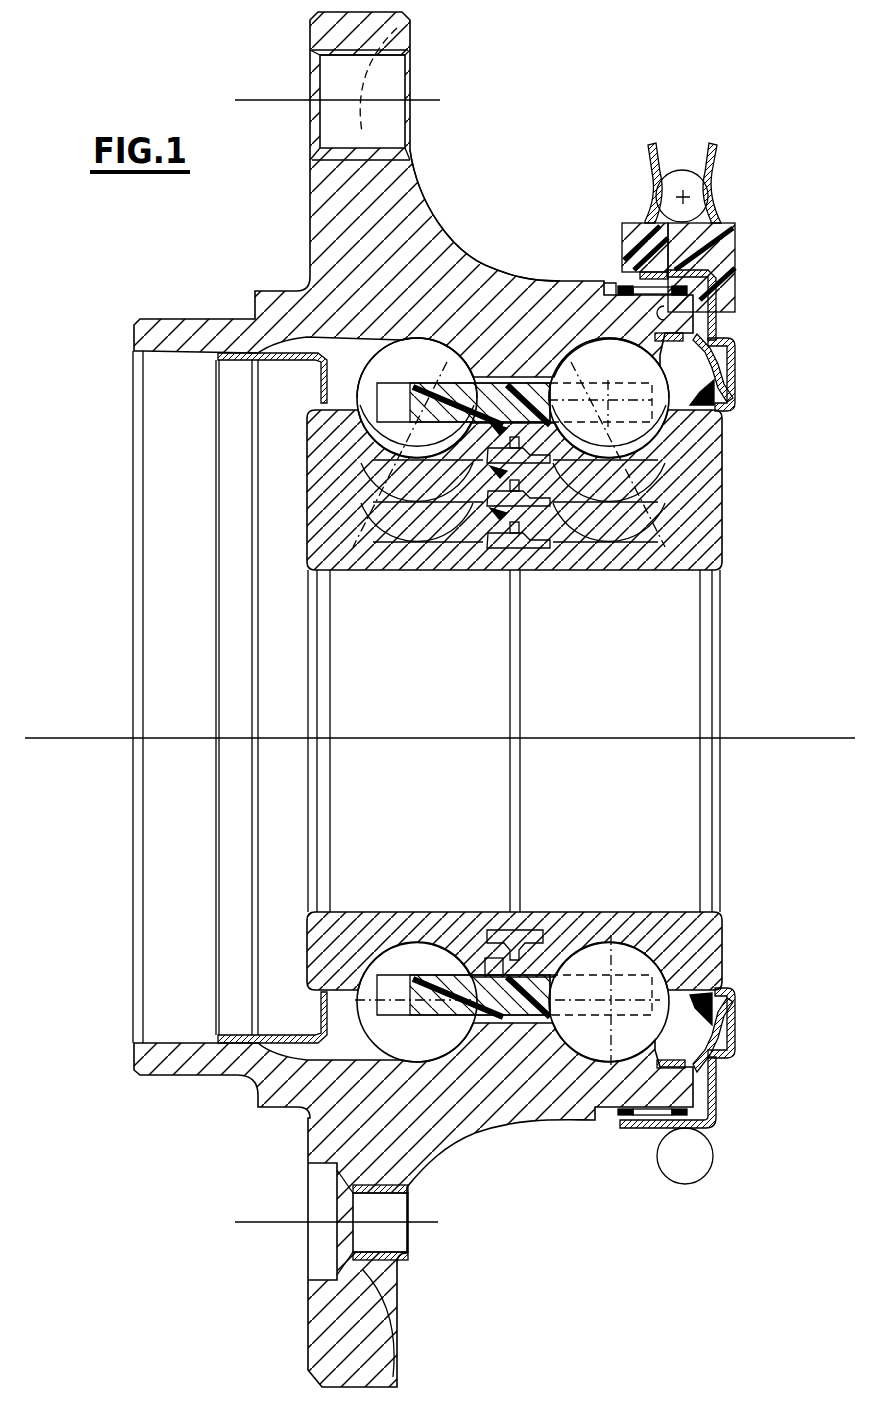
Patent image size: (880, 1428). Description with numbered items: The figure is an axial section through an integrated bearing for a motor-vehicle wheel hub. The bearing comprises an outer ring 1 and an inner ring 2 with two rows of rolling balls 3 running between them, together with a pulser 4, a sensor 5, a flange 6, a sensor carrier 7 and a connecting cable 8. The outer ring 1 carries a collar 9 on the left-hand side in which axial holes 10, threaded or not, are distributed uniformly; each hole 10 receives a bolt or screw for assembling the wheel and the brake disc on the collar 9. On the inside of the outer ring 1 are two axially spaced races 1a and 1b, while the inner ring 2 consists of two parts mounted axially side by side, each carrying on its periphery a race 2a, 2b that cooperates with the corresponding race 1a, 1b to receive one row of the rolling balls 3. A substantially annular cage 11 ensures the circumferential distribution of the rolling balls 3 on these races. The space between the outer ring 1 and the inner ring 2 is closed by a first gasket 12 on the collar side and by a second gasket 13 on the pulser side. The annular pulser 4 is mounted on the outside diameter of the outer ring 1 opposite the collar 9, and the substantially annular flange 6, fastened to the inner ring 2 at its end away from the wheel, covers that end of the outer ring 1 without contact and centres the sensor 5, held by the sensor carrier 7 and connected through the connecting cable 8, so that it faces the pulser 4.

The outer ring 1 is at (494, 262).
The race 1a is at (440, 340).
The race 1b is at (590, 343).
The inner ring 2 is at (645, 568).
The race 2a is at (400, 540).
The race 2b is at (625, 535).
The rolling balls 3 is at (433, 540).
The pulser 4 is at (617, 290).
The sensor 5 is at (630, 242).
The flange 6 is at (738, 378).
The sensor carrier 7 is at (723, 272).
The connecting cable 8 is at (683, 182).
The collar 9 is at (358, 180).
The axial holes 10 is at (388, 88).
The cage 11 is at (505, 440).
The first gasket 12 is at (290, 360).
The second gasket 13 is at (713, 347).